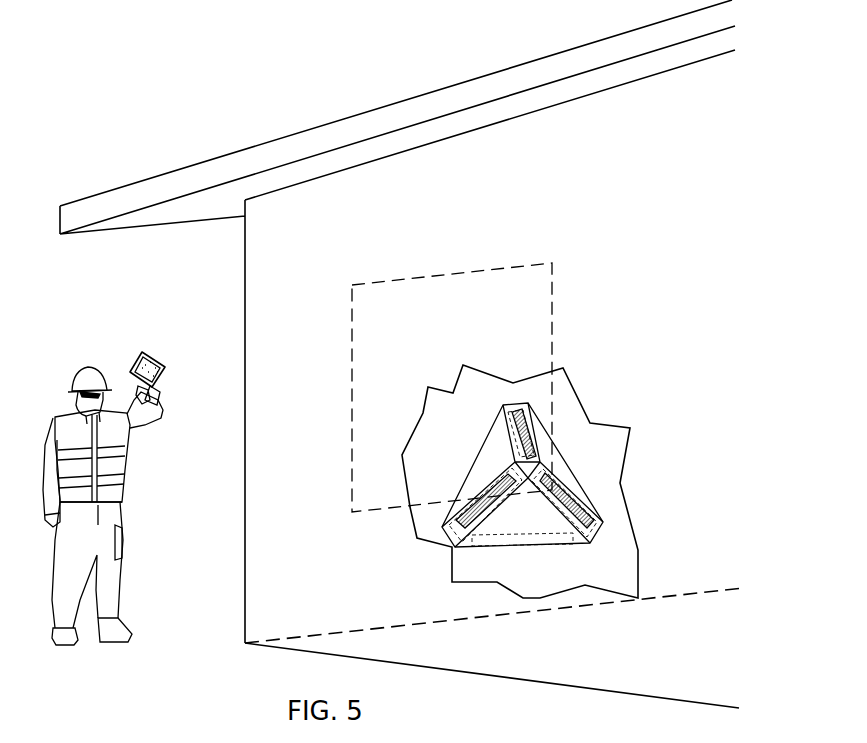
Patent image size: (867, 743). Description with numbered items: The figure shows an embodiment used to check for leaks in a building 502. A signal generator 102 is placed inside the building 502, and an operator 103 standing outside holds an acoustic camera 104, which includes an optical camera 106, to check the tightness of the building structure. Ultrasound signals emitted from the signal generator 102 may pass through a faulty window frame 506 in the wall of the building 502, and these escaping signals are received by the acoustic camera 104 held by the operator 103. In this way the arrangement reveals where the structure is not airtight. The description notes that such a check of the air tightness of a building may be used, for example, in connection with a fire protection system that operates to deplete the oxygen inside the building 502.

The signal generator 102 is at (583, 543).
The operator 103 is at (58, 412).
The acoustic camera 104 is at (145, 357).
The optical camera 106 is at (160, 362).
The building 502 is at (245, 256).
The faulty window frame 506 is at (553, 336).